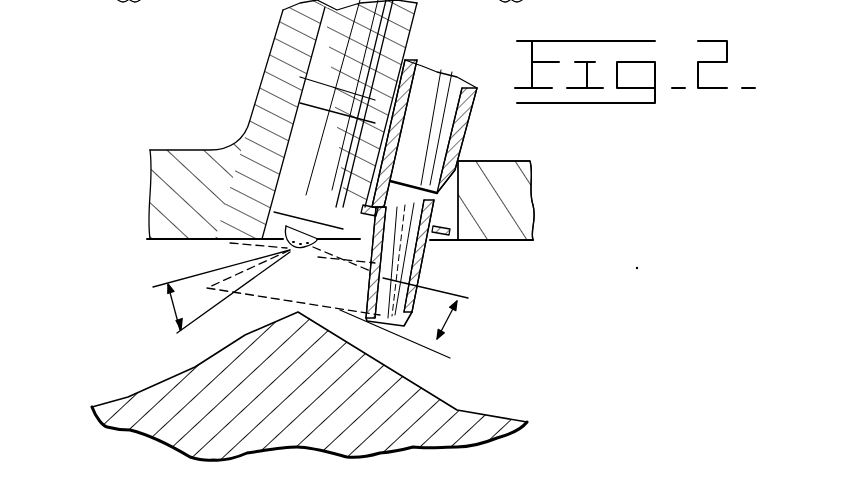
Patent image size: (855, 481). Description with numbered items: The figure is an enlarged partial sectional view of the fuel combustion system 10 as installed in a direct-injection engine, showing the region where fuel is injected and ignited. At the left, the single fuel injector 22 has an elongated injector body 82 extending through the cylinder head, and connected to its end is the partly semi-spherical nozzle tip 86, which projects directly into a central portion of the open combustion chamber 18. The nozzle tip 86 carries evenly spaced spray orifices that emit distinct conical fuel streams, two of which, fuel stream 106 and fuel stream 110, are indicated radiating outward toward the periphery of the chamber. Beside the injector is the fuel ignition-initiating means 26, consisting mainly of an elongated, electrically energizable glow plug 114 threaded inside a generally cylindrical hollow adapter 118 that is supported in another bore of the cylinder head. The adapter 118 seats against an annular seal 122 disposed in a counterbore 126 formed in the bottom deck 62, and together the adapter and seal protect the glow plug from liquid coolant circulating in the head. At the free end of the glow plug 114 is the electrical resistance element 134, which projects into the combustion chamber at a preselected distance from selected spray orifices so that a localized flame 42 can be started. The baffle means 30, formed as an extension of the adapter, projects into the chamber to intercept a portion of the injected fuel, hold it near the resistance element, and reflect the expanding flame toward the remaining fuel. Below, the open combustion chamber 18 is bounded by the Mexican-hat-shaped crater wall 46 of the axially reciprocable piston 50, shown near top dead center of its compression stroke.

The fuel combustion system 10 is at (241, 210).
The fuel injector 22 is at (316, 49).
The injector body 82 is at (335, 62).
The nozzle tip 86 is at (298, 222).
The fuel ignition-initiating means 26 is at (466, 72).
The glow plug 114 is at (445, 108).
The adapter 118 is at (460, 135).
The counterbore 126 is at (455, 183).
The annular seal 122 is at (440, 230).
The bottom deck 62 is at (533, 197).
The baffle means 30 is at (427, 274).
The electrical resistance element 134 is at (381, 330).
The fuel stream 106 is at (408, 318).
The open combustion chamber 18 is at (523, 331).
The fuel stream 110 is at (221, 291).
The flame 42 is at (280, 278).
The piston 50 is at (306, 394).
The crater wall 46 is at (443, 388).